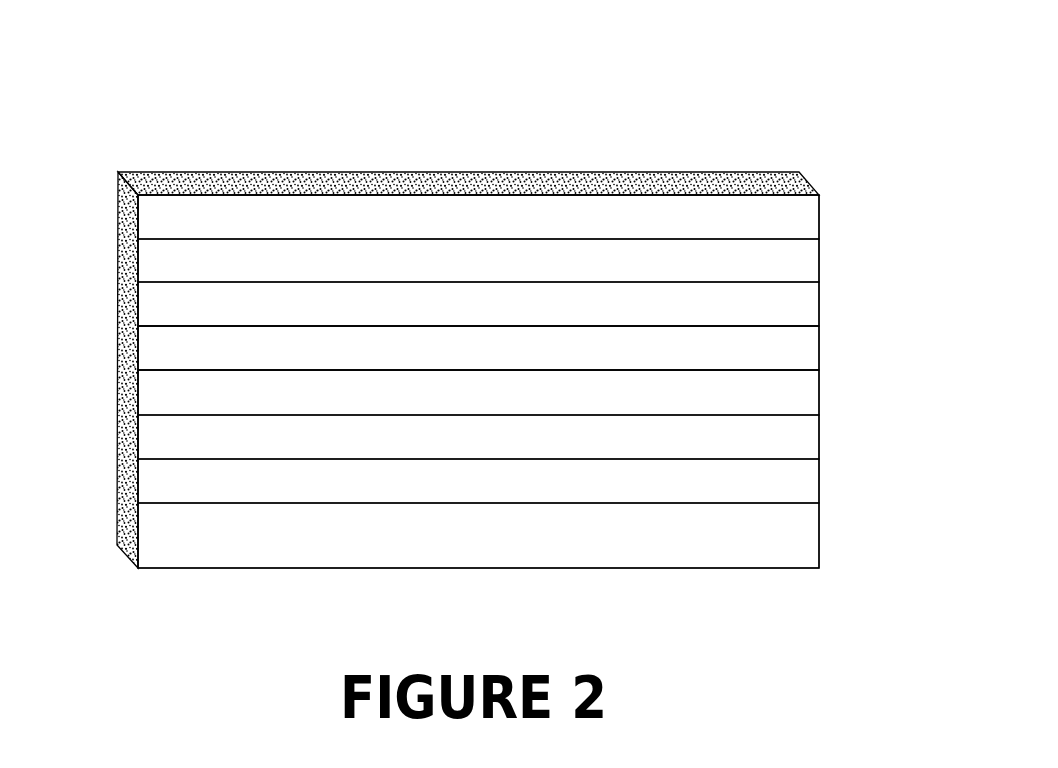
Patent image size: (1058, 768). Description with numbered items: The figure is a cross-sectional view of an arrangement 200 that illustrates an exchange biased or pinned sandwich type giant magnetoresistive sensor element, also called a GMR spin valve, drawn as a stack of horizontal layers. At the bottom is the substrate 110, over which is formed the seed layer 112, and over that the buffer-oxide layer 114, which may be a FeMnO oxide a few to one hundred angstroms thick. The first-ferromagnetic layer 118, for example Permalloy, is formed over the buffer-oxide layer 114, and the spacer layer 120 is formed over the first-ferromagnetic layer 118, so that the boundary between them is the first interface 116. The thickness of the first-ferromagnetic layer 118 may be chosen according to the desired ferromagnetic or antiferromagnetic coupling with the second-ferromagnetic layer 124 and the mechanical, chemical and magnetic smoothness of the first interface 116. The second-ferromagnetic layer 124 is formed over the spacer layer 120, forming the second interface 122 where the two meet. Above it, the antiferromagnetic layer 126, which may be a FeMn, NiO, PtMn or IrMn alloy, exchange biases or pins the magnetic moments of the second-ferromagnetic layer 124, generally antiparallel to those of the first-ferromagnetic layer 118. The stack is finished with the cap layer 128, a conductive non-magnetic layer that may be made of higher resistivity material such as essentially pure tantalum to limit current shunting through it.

The arrangement 200 is at (469, 126).
The substrate 110 is at (819, 535).
The seed layer 112 is at (819, 480).
The buffer-oxide layer 114 is at (819, 435).
The first interface 116 is at (212, 370).
The first-ferromagnetic layer 118 is at (819, 390).
The spacer layer 120 is at (819, 347).
The second interface 122 is at (215, 326).
The second-ferromagnetic layer 124 is at (819, 303).
The antiferromagnetic layer 126 is at (819, 260).
The cap layer 128 is at (819, 215).